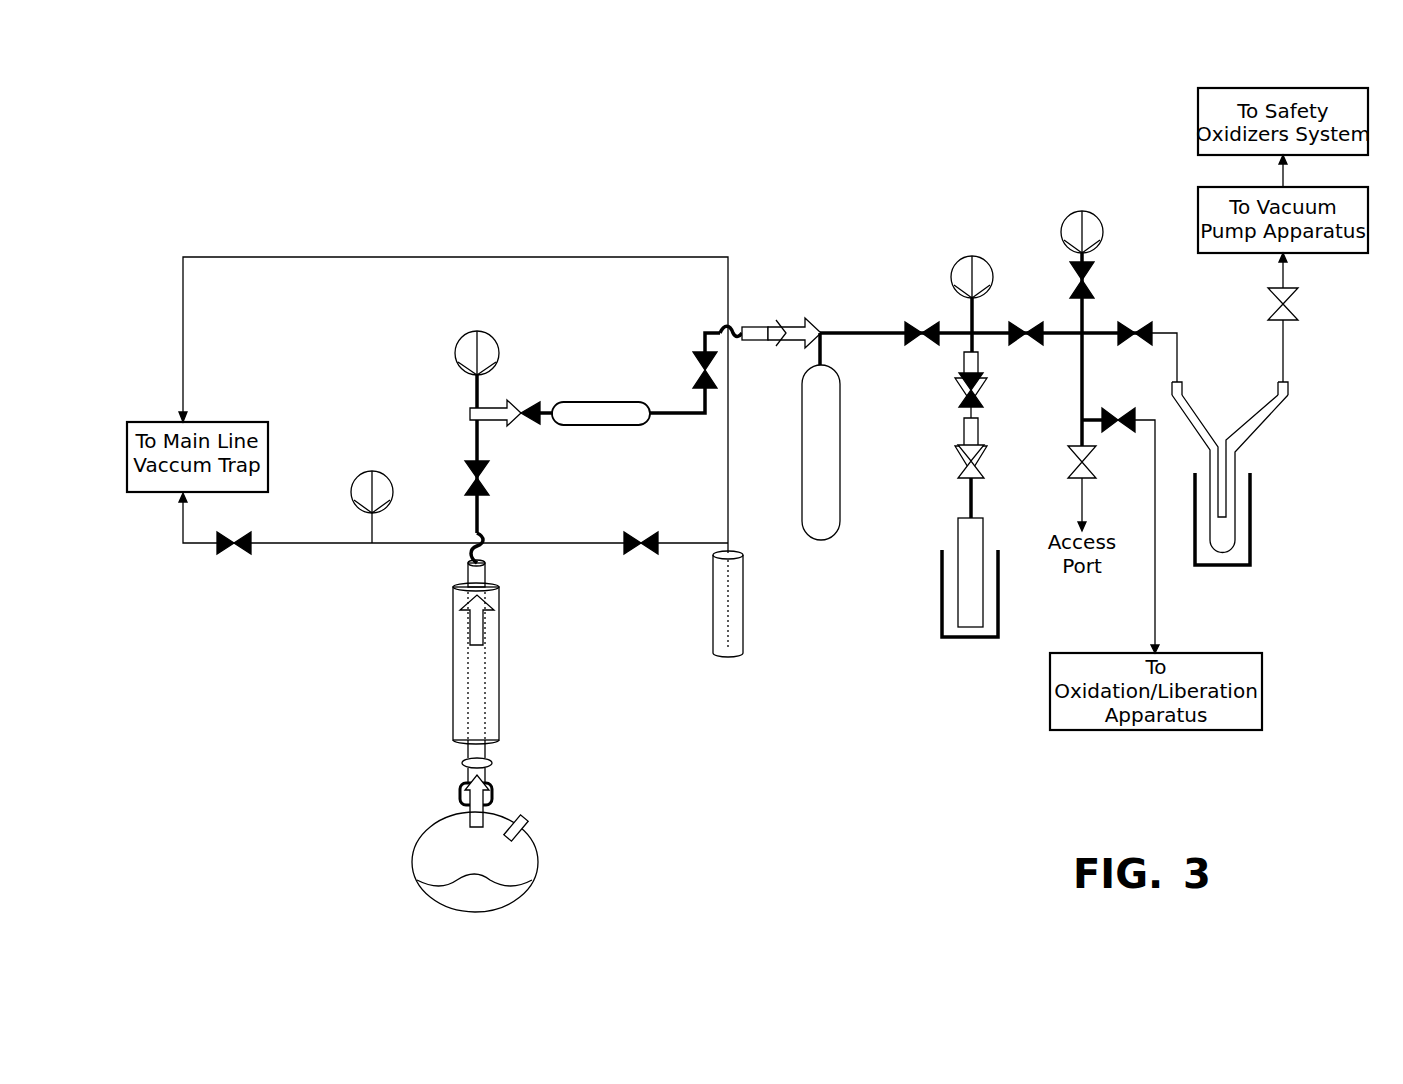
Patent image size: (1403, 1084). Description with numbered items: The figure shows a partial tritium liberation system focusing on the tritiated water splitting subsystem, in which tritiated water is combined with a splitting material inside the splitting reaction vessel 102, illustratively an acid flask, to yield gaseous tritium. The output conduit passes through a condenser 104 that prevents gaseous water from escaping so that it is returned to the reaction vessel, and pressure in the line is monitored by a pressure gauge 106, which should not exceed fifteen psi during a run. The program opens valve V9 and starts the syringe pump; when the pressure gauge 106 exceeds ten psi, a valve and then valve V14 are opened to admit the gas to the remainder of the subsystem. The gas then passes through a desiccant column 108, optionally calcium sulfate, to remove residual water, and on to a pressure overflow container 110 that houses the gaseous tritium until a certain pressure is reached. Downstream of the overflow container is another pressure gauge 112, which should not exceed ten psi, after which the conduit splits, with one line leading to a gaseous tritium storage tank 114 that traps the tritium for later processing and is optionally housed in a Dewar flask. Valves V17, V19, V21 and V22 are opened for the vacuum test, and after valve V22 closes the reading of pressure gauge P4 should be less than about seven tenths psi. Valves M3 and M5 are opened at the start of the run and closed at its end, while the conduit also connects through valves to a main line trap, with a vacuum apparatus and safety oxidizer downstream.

The splitting reaction vessel 102 is at (501, 822).
The condenser 104 is at (492, 686).
The pressure gauge 106 is at (498, 349).
The desiccant column 108 is at (612, 402).
The pressure overflow container 110 is at (826, 452).
The pressure gauge 112 is at (951, 276).
The gaseous tritium storage tank 114 is at (975, 545).
The valve V9 is at (491, 478).
The valve V14 is at (687, 370).
The valve V17 is at (923, 323).
The valve V19 is at (1028, 323).
The valve V21 is at (1100, 280).
The valve V22 is at (1136, 323).
The valve M3 is at (987, 461).
The valve M5 is at (1297, 304).
The pressure gauge P4 is at (1082, 222).